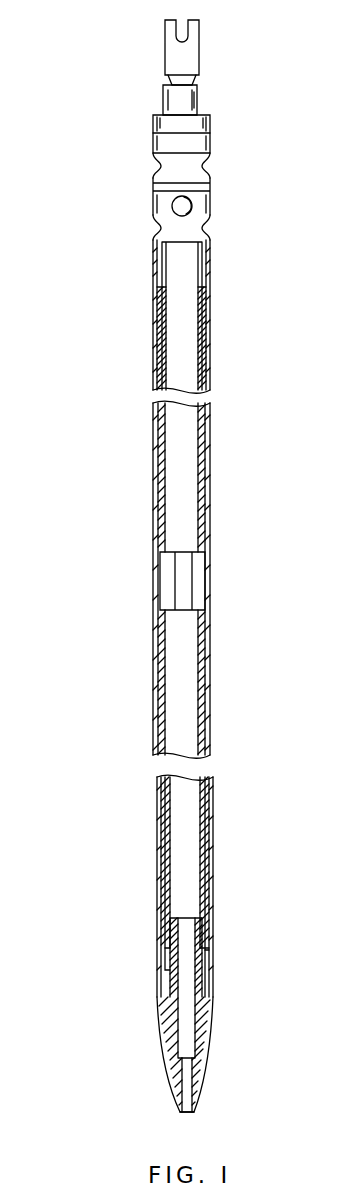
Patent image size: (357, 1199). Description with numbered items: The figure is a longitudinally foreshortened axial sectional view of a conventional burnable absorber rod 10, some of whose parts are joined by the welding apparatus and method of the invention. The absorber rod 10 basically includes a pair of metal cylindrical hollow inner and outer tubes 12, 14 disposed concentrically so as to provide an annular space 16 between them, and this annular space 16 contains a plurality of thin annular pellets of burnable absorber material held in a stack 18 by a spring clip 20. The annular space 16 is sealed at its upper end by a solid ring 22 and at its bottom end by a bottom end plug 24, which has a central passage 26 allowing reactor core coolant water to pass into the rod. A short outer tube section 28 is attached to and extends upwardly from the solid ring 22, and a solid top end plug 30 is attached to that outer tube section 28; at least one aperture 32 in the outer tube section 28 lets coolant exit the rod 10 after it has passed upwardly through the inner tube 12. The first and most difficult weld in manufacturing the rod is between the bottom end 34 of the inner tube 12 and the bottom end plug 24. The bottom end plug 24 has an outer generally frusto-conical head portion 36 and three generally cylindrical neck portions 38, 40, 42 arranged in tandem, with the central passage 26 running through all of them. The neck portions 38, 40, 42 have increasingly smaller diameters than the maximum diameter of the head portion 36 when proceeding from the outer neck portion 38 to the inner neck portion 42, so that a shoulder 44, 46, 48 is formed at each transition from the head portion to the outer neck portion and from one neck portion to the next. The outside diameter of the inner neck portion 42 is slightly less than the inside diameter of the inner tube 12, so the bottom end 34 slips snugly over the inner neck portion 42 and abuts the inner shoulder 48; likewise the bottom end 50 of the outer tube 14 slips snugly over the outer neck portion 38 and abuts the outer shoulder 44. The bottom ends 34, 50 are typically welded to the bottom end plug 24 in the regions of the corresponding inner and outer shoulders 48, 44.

The burnable absorber rod 10 is at (95, 195).
The inner tube 12 is at (190, 579).
The outer tube 14 is at (212, 685).
The annular space 16 is at (163, 477).
The stack 18 is at (160, 683).
The spring clip 20 is at (168, 578).
The solid ring 22 is at (157, 338).
The bottom end plug 24 is at (215, 1058).
The central passage 26 is at (185, 1022).
The outer tube section 28 is at (153, 252).
The solid top end plug 30 is at (208, 122).
The aperture 32 is at (193, 205).
The bottom end of the inner tube 34 is at (190, 914).
The frusto-conical head portion 36 is at (215, 1018).
The outer neck portion 38 is at (168, 988).
The middle neck portion 40 is at (200, 950).
The inner neck portion 42 is at (173, 925).
The outer shoulder 44 is at (212, 993).
The shoulder 46 is at (163, 955).
The inner shoulder 48 is at (207, 955).
The bottom end of the outer tube 50 is at (213, 968).